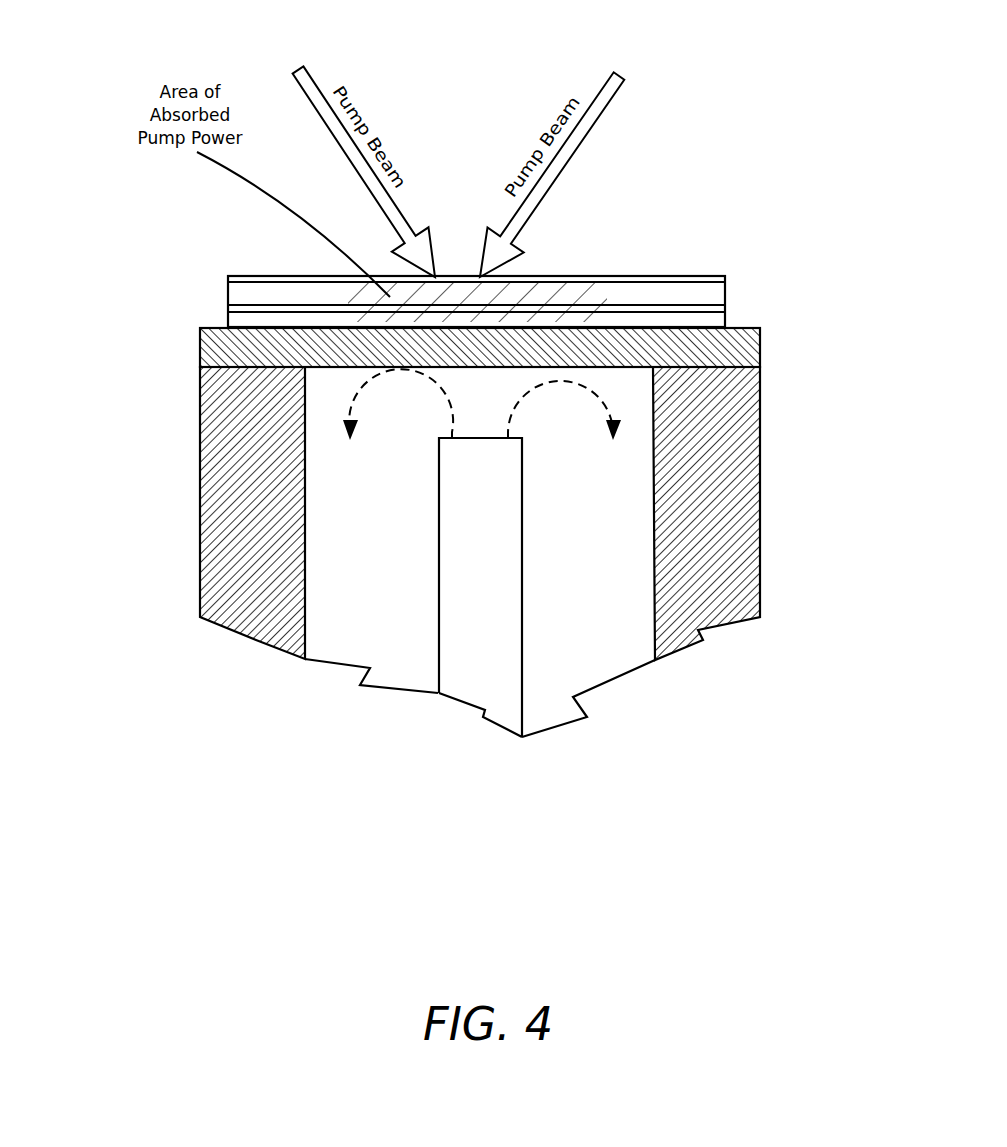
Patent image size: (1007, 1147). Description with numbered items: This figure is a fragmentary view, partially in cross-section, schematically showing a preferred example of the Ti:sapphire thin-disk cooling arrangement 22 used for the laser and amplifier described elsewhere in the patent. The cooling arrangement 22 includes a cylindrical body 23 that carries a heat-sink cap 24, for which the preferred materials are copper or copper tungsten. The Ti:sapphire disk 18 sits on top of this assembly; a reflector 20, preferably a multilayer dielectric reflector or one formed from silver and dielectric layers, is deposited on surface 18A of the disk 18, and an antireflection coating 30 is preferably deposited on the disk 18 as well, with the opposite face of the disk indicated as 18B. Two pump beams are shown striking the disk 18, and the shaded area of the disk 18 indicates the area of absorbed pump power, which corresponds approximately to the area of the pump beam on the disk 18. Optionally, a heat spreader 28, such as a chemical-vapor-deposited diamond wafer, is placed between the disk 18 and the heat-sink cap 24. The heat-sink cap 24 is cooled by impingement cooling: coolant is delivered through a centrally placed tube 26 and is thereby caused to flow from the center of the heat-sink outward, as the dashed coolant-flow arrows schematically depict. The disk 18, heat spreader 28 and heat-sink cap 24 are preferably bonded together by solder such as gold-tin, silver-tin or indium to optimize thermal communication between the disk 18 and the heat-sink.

The disk 18 is at (228, 288).
The surface of disk 18A is at (627, 305).
The second surface of disk 18B is at (612, 277).
The reflector 20 is at (227, 308).
The cooling arrangement 22 is at (208, 788).
The cylindrical body 23 is at (207, 575).
The heat-sink cap 24 is at (202, 357).
The tube 26 is at (523, 588).
The heat spreader 28 is at (730, 320).
The antireflection coating 30 is at (682, 272).